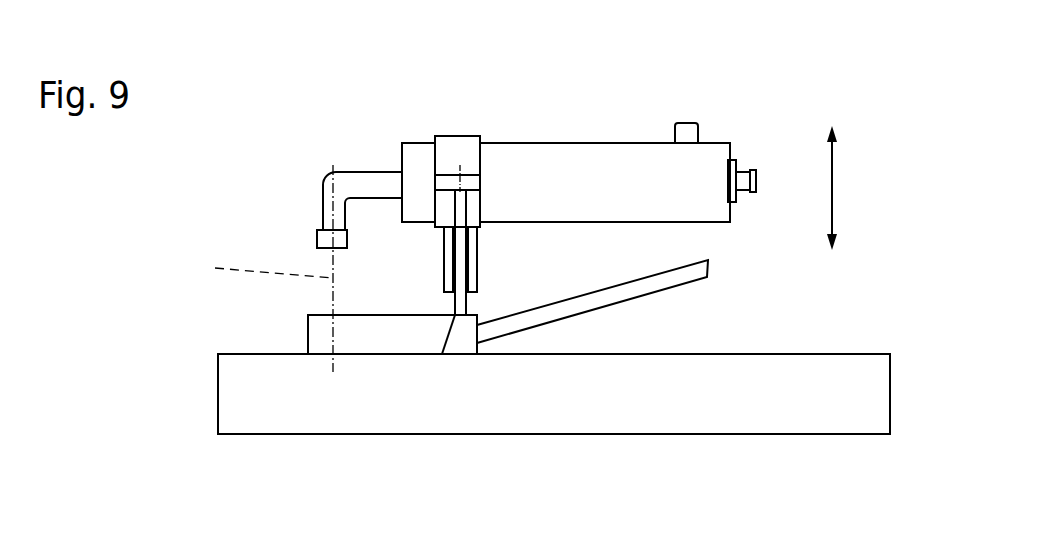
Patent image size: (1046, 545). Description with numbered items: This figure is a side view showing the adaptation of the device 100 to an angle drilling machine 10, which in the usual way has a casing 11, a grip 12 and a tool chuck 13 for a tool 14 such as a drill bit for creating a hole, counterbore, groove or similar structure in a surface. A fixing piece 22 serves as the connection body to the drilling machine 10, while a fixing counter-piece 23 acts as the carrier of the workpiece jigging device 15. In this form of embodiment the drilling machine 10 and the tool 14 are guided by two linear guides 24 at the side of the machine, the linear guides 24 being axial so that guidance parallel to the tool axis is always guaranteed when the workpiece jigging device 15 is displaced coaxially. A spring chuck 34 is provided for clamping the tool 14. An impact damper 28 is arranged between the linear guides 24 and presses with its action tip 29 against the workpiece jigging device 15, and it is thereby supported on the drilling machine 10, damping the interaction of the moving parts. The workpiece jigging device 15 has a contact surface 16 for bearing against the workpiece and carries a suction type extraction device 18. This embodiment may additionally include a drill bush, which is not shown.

The drilling machine 10 is at (579, 122).
The casing 11 is at (579, 147).
The grip 12 is at (525, 148).
The tool chuck 13 is at (300, 239).
The tool 14 is at (259, 269).
The workpiece jigging device 15 is at (317, 322).
The contact surface 16 is at (320, 355).
The suction type extraction device 18 is at (639, 300).
The fixing piece 22 is at (453, 148).
The fixing counter-piece 23 is at (467, 325).
The linear guides 24 is at (448, 253).
The impact damper 28 is at (460, 272).
The action tip 29 is at (442, 354).
The spring chuck 34 is at (325, 235).
The device 100 is at (226, 298).